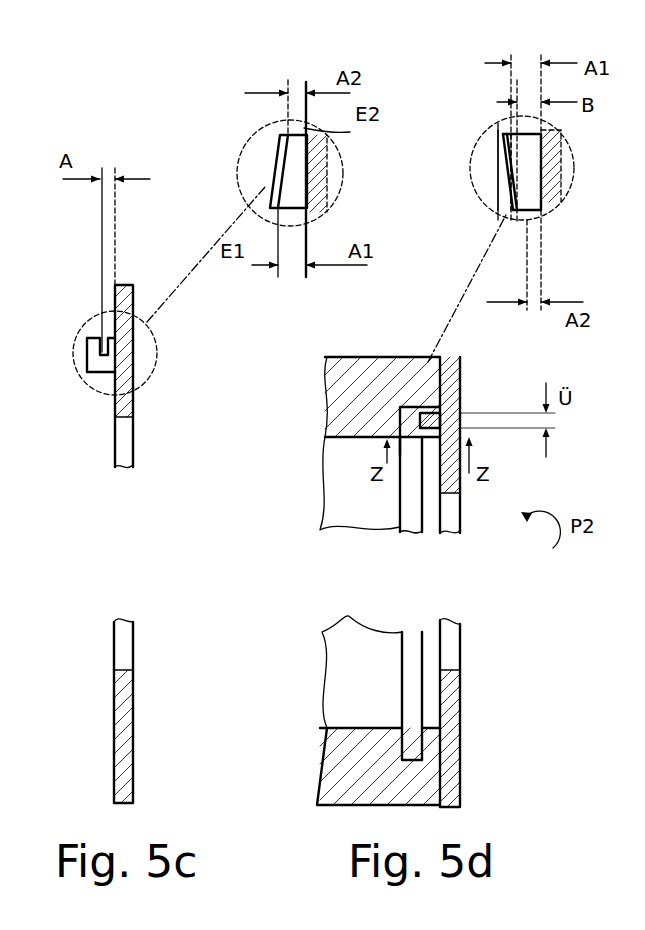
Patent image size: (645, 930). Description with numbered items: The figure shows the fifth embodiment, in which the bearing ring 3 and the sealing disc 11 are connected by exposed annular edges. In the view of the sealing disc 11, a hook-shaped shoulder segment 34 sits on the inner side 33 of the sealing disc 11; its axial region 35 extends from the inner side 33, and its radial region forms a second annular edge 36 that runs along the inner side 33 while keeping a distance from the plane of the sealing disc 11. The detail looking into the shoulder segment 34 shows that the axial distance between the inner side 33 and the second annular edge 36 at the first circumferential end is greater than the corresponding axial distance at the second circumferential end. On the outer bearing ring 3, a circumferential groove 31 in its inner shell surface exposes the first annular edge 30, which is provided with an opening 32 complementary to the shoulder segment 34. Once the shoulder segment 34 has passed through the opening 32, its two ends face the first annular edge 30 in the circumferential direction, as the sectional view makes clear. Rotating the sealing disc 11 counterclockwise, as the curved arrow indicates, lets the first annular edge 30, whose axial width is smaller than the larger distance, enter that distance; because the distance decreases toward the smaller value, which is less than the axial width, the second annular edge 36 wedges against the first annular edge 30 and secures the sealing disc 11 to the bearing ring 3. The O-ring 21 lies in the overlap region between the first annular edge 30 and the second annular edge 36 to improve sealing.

In FIG. 5D, the bearing ring 3 is at (335, 395).
In FIG. 5C, the sealing disc 11 is at (125, 402).
In FIG. 5D, the sealing disc 11 is at (543, 172).
In FIG. 5D, the O-ring 21 is at (461, 413).
In FIG. 5D, the first annular edge 30 is at (520, 128).
In FIG. 5D, the circumferential groove 31 is at (408, 406).
In FIG. 5D, the opening 32 is at (501, 130).
In FIG. 5C, the inner side 33 is at (104, 287).
In FIG. 5C, the shoulder segment 34 is at (86, 326).
In FIG. 5C, the axial region 35 is at (103, 372).
In FIG. 5D, the axial region 35 is at (535, 187).
In FIG. 5C, the second annular edge 36 is at (88, 350).
In FIG. 5D, the second annular edge 36 is at (500, 175).